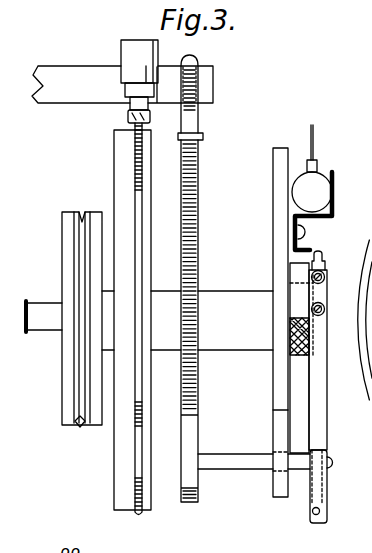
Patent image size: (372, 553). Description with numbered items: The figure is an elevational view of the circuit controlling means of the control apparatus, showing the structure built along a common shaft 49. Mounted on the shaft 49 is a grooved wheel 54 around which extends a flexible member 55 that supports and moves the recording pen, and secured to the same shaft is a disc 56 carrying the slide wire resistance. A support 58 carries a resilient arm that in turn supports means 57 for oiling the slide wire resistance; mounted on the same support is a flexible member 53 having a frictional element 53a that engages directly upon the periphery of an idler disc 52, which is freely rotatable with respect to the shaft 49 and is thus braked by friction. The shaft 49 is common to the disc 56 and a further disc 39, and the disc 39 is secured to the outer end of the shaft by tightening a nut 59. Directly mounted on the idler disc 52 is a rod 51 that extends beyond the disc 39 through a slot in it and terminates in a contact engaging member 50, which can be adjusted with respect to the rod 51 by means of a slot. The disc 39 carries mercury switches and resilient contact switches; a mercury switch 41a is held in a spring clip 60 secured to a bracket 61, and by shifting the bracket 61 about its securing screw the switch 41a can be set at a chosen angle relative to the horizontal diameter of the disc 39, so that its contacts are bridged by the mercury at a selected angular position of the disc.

The disc 39 is at (282, 160).
The mercury switch 41a is at (320, 174).
The shaft 49 is at (41, 316).
The contact engaging member 50 is at (138, 187).
The rod 51 is at (228, 460).
The idler disc 52 is at (197, 385).
The flexible member 53 is at (198, 113).
The frictional element 53a is at (203, 137).
The grooved wheel 54 is at (62, 402).
The flexible member 55 is at (80, 427).
The disc 56 is at (115, 466).
The oiling means 57 is at (135, 52).
The support 58 is at (54, 75).
The nut 59 is at (289, 330).
The spring clip 60 is at (335, 190).
The bracket 61 is at (300, 247).